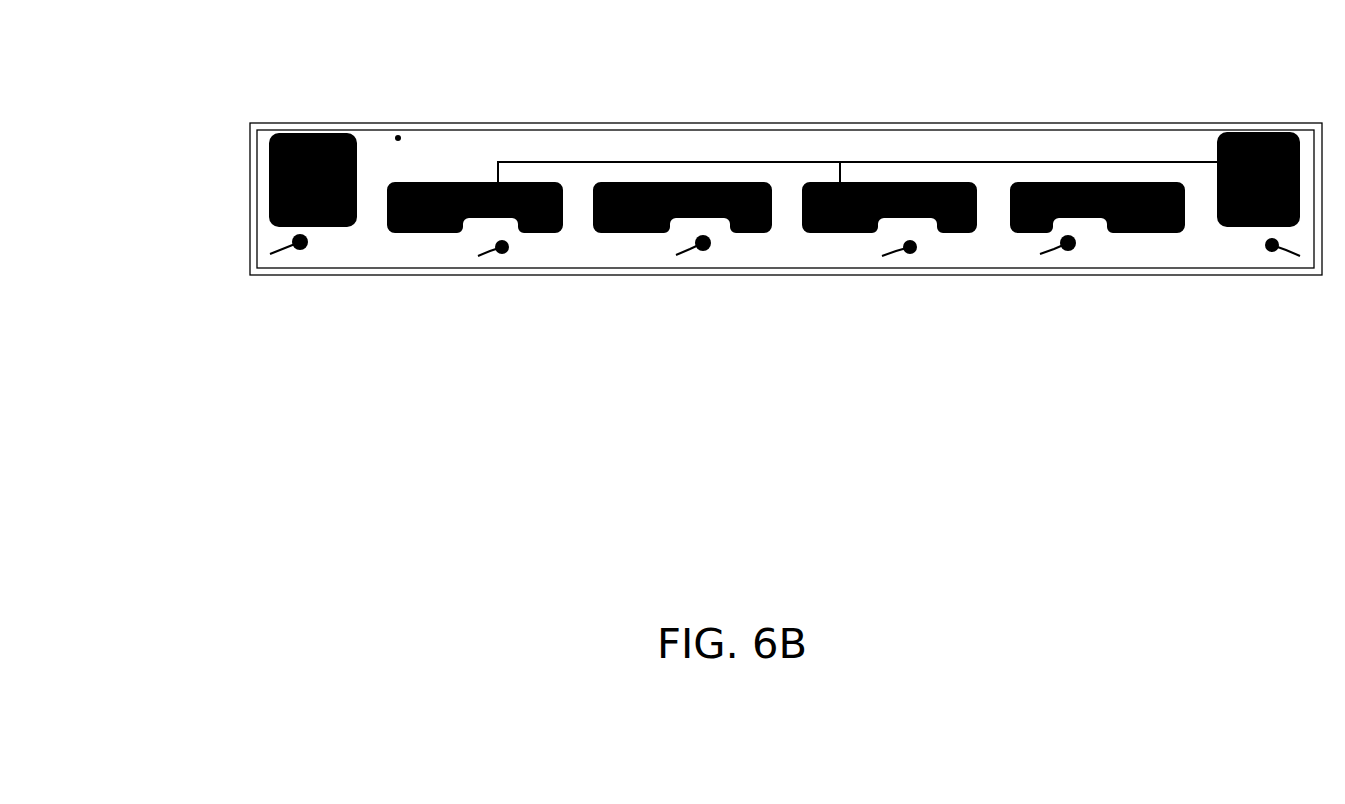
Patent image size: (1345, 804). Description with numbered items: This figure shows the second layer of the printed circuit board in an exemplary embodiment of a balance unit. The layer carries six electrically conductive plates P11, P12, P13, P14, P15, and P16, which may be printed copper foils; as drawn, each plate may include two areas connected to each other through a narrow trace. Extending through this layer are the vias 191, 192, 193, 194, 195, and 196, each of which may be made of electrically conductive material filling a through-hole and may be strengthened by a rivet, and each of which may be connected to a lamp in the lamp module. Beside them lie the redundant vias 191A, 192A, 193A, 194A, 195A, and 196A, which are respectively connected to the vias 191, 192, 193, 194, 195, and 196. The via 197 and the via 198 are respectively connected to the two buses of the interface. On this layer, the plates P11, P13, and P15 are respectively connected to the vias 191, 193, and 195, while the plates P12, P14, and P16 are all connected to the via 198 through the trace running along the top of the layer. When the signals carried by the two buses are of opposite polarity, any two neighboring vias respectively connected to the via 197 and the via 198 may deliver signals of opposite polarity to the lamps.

The via 197 is at (397, 136).
The via 198 is at (500, 168).
The electrically conductive plate P11 is at (347, 224).
The electrically conductive plate P12 is at (562, 182).
The electrically conductive plate P13 is at (634, 233).
The electrically conductive plate P14 is at (908, 182).
The electrically conductive plate P15 is at (1170, 233).
The electrically conductive plate P16 is at (1218, 148).
The via 191 is at (300, 242).
The redundant via 191A is at (270, 254).
The via 192 is at (502, 247).
The redundant via 192A is at (478, 256).
The via 193 is at (703, 243).
The redundant via 193A is at (676, 255).
The via 194 is at (910, 247).
The redundant via 194A is at (882, 256).
The via 195 is at (1068, 243).
The redundant via 195A is at (1040, 254).
The via 196 is at (1272, 245).
The redundant via 196A is at (1300, 256).